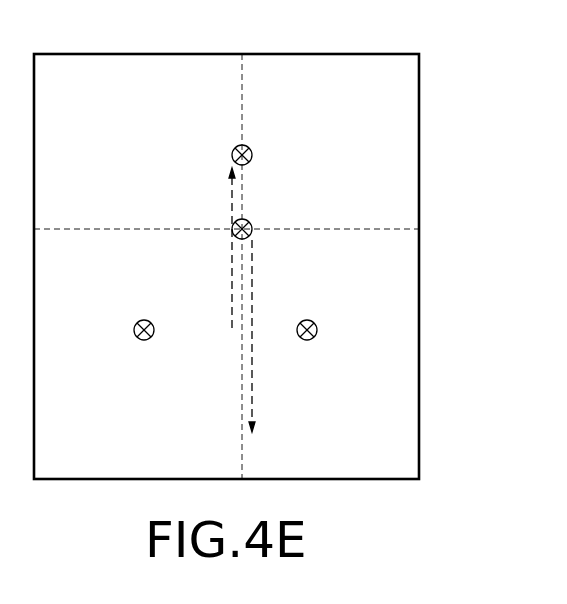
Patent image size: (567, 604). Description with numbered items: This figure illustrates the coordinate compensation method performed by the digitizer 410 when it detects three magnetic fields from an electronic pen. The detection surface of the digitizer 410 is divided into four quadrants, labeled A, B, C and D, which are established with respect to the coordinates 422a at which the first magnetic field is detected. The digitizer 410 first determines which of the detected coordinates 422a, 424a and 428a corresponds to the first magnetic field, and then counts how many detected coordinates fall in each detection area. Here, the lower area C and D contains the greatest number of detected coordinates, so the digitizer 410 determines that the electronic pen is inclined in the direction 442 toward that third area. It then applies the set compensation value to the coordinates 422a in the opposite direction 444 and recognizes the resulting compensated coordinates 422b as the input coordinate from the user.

The digitizer 410 is at (419, 97).
The coordinates at which the first magnetic field is detected 422a is at (250, 220).
The compensated coordinates 422b is at (252, 155).
The detected coordinates 424a is at (142, 320).
The detected coordinates 428a is at (317, 328).
The compensation direction 444 is at (232, 255).
The inclination direction 442 is at (252, 382).